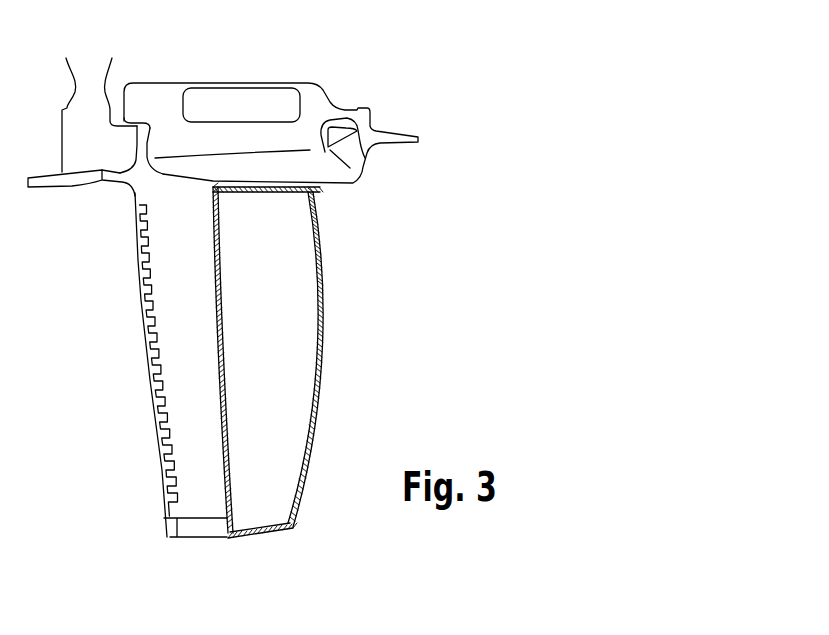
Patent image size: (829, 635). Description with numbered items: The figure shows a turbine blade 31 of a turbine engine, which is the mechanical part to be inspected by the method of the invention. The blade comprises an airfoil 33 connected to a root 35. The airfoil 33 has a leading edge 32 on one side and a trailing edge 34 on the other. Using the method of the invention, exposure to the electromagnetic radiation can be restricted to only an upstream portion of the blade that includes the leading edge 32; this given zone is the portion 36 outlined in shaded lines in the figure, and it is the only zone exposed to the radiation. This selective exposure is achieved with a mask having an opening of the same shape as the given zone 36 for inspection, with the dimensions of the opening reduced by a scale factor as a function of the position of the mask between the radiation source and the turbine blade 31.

The turbine blade 31 is at (309, 60).
The leading edge 32 is at (323, 377).
The airfoil 33 is at (170, 298).
The trailing edge 34 is at (147, 407).
The root 35 is at (333, 86).
The upstream portion of the blade including the leading edge 36 is at (272, 537).